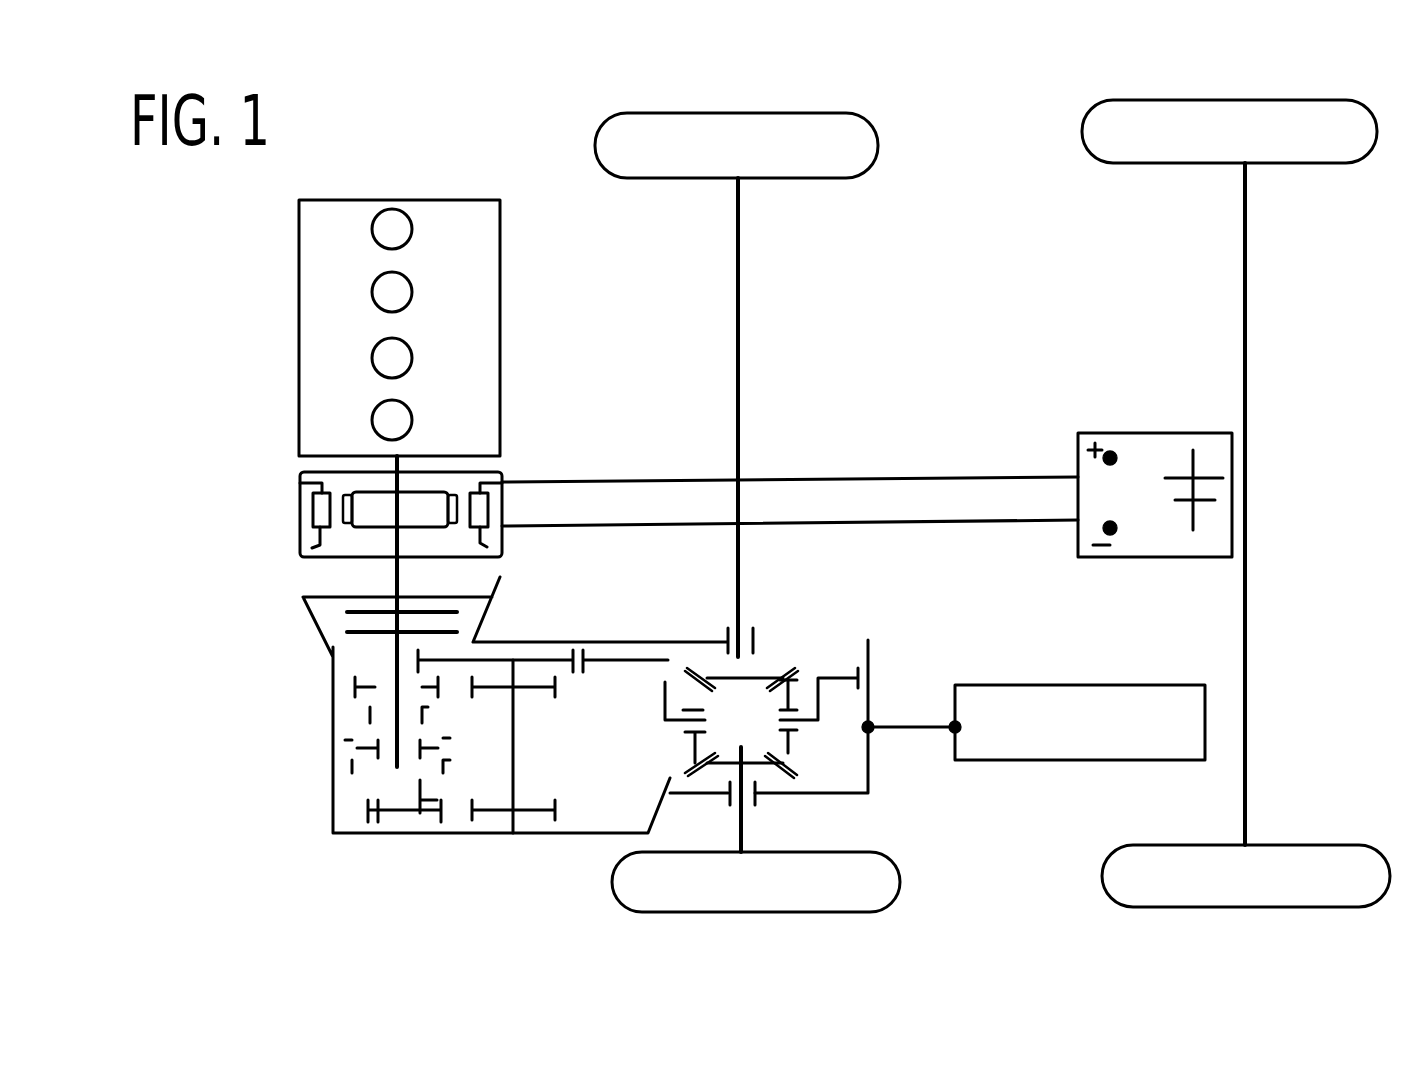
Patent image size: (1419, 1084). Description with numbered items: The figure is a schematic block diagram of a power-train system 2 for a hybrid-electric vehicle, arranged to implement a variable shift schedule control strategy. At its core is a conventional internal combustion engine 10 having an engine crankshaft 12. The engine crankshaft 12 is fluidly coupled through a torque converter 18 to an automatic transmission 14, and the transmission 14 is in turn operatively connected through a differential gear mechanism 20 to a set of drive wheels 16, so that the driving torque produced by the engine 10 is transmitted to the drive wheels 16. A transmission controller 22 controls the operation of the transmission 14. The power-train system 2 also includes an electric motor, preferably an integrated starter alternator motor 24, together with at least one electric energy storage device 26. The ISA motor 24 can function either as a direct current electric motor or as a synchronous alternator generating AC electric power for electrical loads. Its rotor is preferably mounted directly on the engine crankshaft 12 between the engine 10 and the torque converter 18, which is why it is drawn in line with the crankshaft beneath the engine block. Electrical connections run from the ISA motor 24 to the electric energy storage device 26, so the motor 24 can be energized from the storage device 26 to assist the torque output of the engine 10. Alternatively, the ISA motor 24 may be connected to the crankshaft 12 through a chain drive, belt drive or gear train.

The power-train system 2 is at (436, 150).
The internal combustion engine 10 is at (502, 317).
The engine crankshaft 12 is at (397, 577).
The automatic transmission 14 is at (333, 765).
The drive wheels 16 is at (802, 178).
The torque converter 18 is at (362, 637).
The differential gear mechanism 20 is at (788, 740).
The transmission controller 22 is at (1015, 762).
The integrated starter alternator motor 24 is at (300, 513).
The electric energy storage device 26 is at (1135, 433).